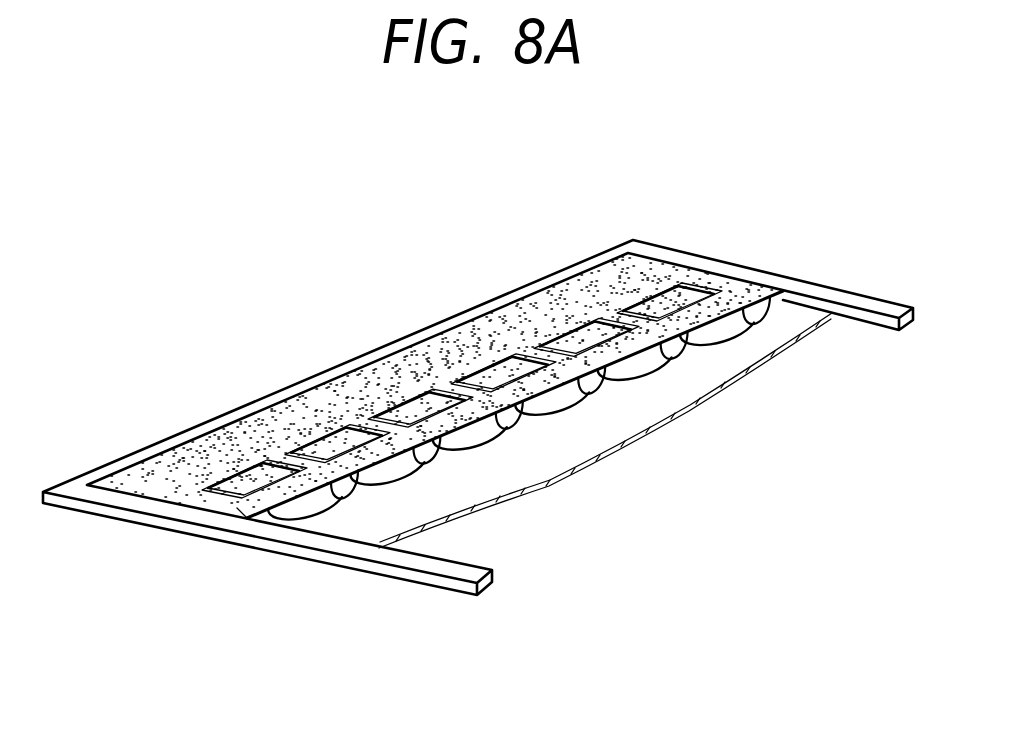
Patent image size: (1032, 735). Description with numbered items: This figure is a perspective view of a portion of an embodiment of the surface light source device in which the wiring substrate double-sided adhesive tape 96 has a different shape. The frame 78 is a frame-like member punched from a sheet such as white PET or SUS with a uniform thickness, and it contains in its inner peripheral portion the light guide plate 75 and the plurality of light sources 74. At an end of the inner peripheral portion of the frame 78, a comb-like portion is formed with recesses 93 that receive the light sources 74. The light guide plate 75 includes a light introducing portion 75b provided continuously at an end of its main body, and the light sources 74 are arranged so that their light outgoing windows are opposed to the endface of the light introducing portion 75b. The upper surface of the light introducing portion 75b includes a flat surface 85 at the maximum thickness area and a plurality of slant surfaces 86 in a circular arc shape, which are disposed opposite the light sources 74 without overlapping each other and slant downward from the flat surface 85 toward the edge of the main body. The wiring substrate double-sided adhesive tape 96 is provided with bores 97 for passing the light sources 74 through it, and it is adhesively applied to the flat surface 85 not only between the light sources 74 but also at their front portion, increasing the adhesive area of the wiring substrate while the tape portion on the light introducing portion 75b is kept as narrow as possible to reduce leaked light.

The frame 78 is at (725, 262).
The wiring substrate double-sided adhesive tape 96 is at (437, 355).
The recess 93 is at (243, 477).
The bore 97 is at (563, 337).
The light source 74 is at (253, 485).
The flat surface 85 is at (317, 497).
The slant surface 86 is at (332, 497).
The light introducing portion 75b is at (500, 499).
The light guide plate 75 is at (633, 415).